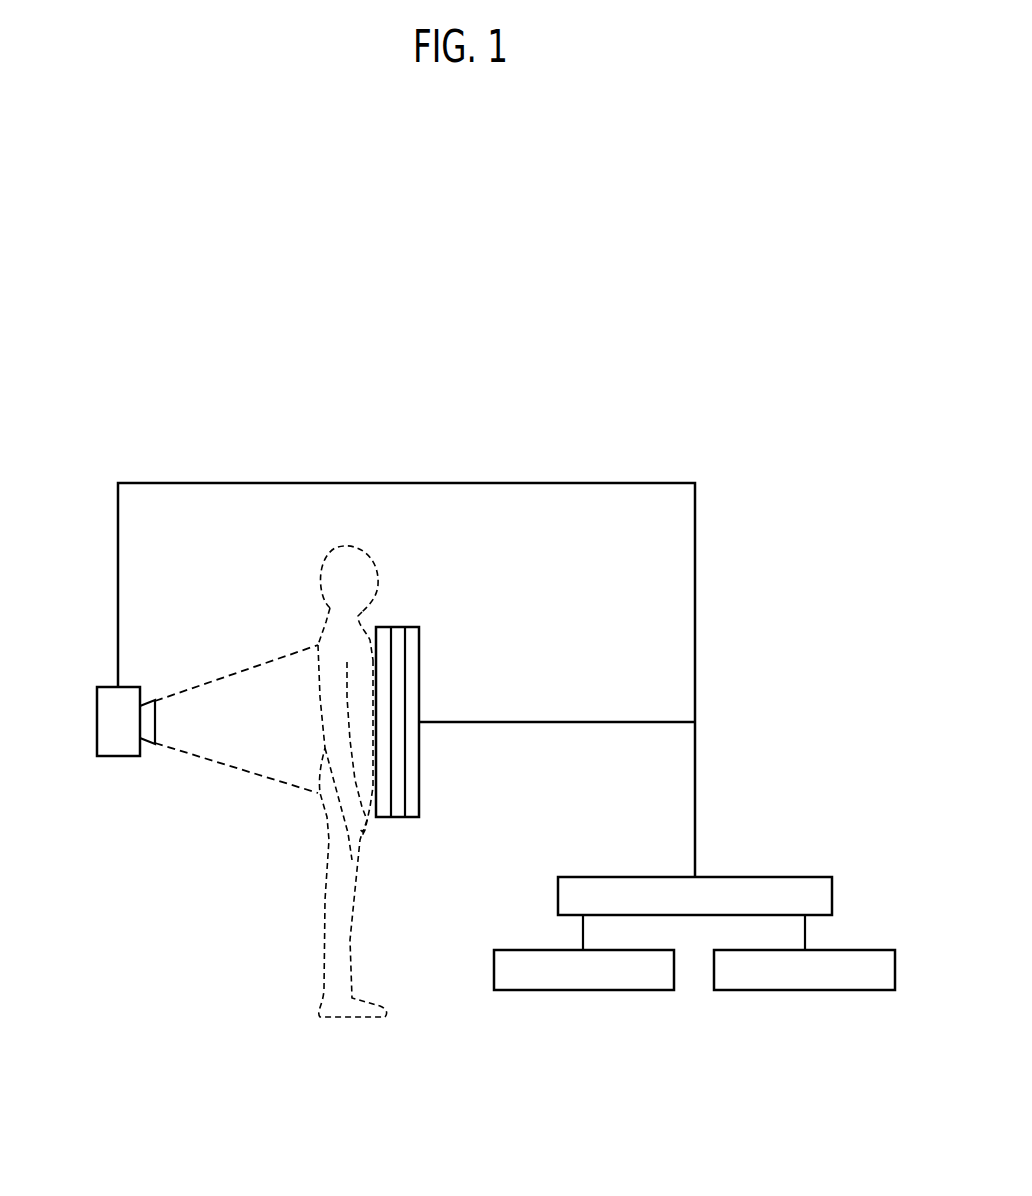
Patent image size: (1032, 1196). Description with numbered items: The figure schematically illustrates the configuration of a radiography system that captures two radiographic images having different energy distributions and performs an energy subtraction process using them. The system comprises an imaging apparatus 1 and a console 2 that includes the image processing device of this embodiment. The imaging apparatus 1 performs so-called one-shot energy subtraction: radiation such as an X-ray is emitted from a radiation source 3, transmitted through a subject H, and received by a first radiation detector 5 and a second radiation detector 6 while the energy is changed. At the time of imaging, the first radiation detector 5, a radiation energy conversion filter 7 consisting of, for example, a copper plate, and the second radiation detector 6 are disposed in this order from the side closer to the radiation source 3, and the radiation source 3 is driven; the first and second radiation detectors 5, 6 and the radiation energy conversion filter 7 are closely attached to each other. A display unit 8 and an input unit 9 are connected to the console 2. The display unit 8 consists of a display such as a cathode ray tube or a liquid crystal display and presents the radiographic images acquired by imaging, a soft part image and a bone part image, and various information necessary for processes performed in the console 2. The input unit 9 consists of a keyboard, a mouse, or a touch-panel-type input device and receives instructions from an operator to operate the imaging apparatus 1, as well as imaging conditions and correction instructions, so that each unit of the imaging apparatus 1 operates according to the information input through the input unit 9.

The imaging apparatus 1 is at (156, 450).
The console 2 is at (833, 888).
The radiation source 3 is at (97, 715).
The first radiation detector 5 is at (384, 627).
The second radiation detector 6 is at (410, 627).
The radiation energy conversion filter 7 is at (396, 818).
The display unit 8 is at (627, 990).
The input unit 9 is at (848, 990).
The subject H is at (327, 548).